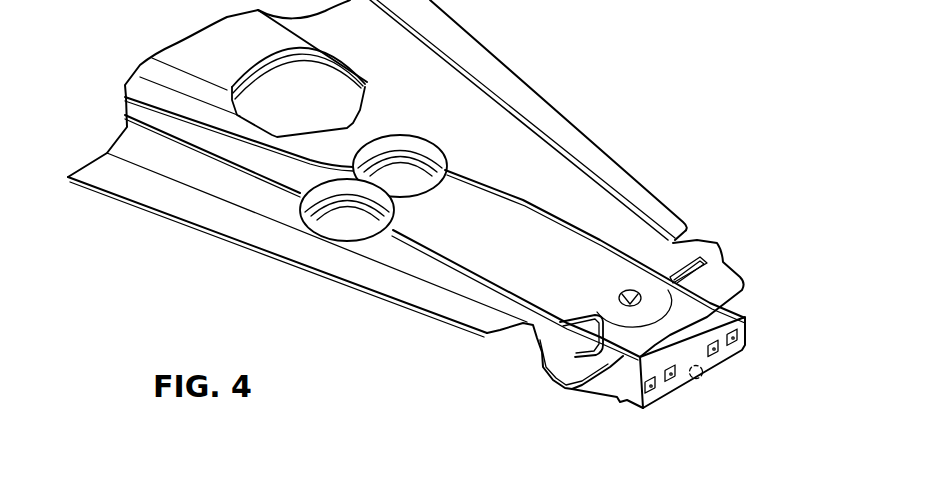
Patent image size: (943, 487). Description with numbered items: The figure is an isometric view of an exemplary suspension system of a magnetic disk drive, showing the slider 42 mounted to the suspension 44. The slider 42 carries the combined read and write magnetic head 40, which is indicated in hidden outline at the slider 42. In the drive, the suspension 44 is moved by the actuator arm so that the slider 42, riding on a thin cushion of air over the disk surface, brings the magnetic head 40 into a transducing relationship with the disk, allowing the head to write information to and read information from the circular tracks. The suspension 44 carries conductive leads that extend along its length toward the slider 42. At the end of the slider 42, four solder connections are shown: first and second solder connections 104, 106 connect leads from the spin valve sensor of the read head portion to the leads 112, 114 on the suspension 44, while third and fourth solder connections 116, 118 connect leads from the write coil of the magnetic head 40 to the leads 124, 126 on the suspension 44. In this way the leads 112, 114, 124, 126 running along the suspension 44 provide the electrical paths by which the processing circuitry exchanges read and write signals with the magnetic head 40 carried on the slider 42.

The suspension 44 is at (548, 92).
The lead 114 is at (605, 235).
The lead 124 is at (467, 266).
The lead 126 is at (523, 201).
The lead 112 is at (437, 250).
The slider 42 is at (583, 397).
The first solder connection 104 is at (652, 390).
The third solder connection 116 is at (670, 374).
The fourth solder connection 118 is at (717, 349).
The second solder connection 106 is at (734, 338).
The magnetic head 40 is at (701, 380).